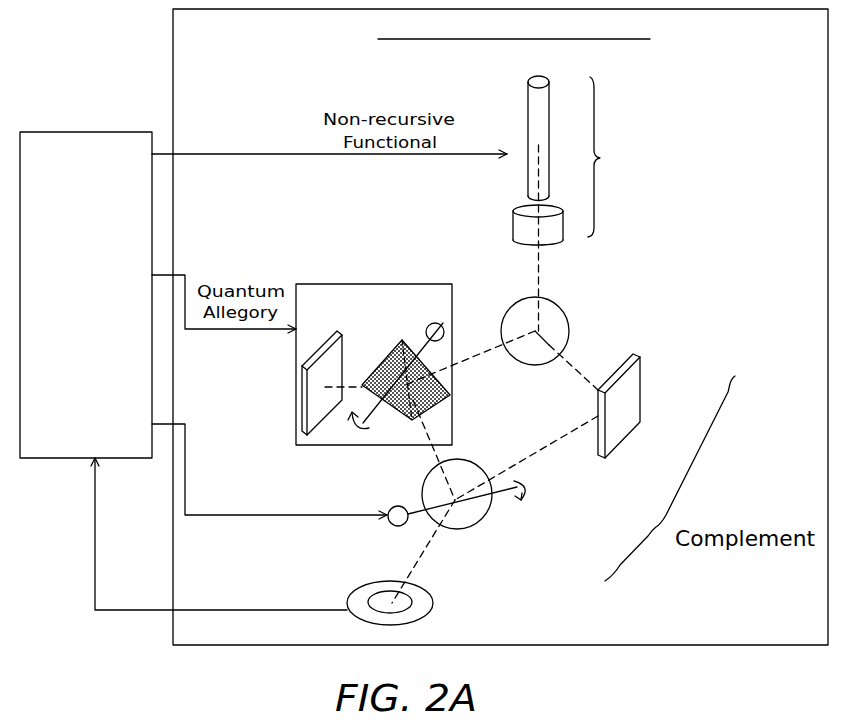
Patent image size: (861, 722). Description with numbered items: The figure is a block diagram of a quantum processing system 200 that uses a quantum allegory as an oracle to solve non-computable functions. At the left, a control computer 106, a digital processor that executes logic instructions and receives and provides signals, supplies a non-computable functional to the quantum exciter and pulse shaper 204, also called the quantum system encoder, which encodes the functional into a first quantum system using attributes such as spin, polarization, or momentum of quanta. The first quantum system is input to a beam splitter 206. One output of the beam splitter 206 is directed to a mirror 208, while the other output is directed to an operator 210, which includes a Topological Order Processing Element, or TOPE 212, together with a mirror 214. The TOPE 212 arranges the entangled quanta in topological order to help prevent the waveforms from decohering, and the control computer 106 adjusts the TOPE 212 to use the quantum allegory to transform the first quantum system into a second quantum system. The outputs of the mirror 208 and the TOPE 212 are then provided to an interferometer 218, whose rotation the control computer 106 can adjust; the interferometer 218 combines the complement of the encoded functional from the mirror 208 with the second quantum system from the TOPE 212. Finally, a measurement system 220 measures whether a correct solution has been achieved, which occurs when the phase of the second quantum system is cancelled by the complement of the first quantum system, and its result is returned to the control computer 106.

The quantum processing system 200 is at (775, 41).
The control computer 106 is at (102, 285).
The quantum exciter and pulse shaper 204 is at (651, 203).
The beam splitter 206 is at (544, 297).
The mirror 208 is at (581, 427).
The operator 210 is at (409, 284).
The Topological Order Processing Element (TOPE) 212 is at (450, 388).
The mirror 214 is at (299, 391).
The interferometer 218 is at (484, 518).
The measurement system 220 is at (357, 590).